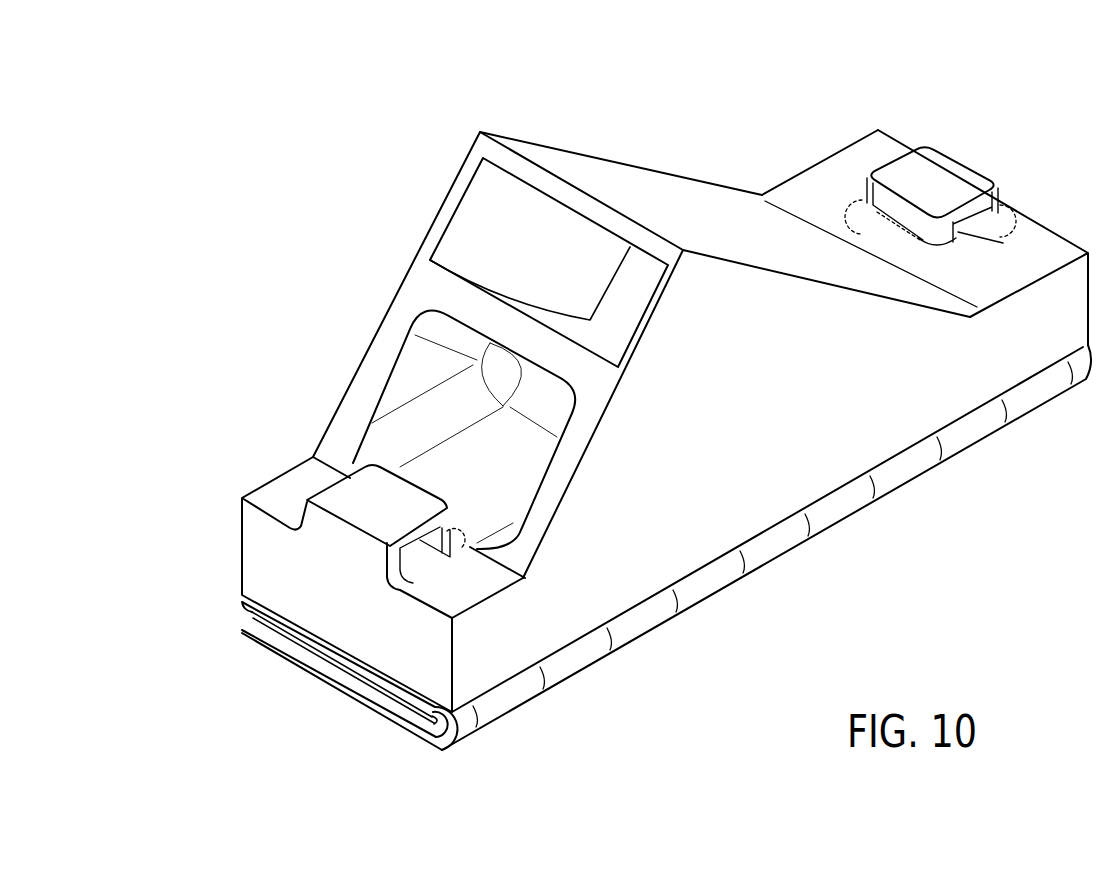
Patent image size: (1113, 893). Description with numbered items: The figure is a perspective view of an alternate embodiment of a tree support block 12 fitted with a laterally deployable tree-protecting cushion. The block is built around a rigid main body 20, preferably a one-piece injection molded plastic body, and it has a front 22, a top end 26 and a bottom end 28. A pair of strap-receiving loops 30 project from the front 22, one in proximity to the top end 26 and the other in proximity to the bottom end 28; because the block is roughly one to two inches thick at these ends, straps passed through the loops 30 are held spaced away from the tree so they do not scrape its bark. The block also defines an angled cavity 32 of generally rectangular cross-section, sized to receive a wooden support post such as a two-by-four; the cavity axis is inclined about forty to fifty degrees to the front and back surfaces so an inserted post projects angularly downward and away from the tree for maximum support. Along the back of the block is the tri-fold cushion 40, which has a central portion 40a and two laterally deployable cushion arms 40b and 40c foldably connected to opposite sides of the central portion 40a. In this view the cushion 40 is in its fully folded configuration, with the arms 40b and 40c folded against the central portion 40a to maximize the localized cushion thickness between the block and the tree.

The support block 12 is at (390, 330).
The rigid main body 20 is at (772, 436).
The front 22 is at (662, 177).
The top end 26 is at (900, 133).
The bottom end 28 is at (262, 563).
The strap-receiving loop 30 is at (332, 495).
The angled cavity 32 is at (468, 207).
The tri-fold cushion 40 is at (858, 543).
The central portion 40a is at (358, 662).
The first cushion arm 40b is at (322, 687).
The second cushion arm 40c is at (412, 717).